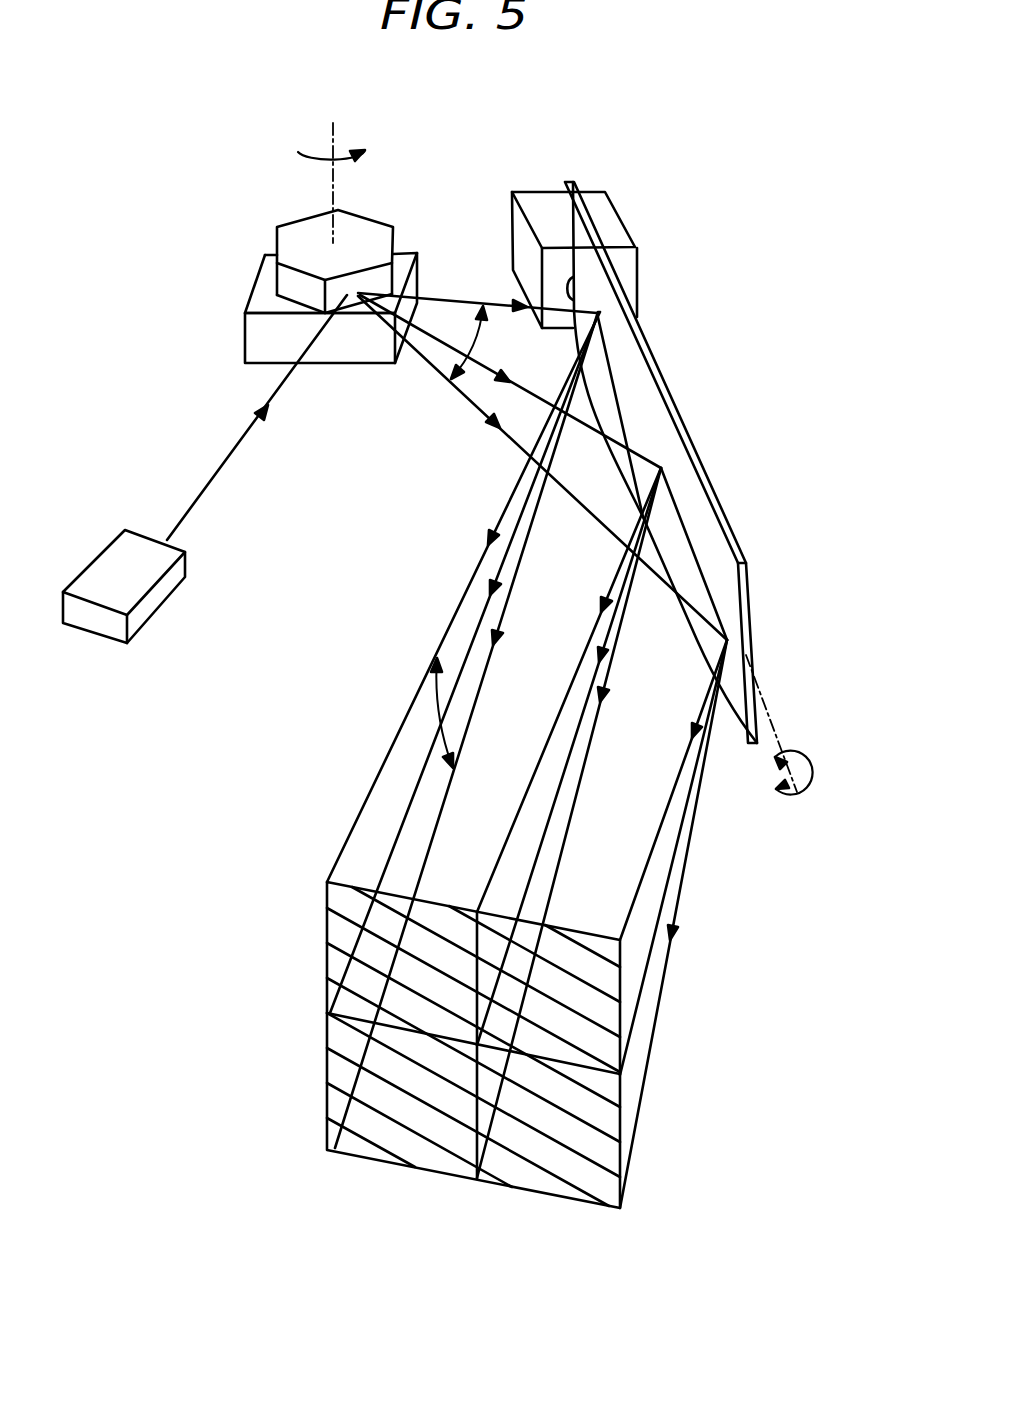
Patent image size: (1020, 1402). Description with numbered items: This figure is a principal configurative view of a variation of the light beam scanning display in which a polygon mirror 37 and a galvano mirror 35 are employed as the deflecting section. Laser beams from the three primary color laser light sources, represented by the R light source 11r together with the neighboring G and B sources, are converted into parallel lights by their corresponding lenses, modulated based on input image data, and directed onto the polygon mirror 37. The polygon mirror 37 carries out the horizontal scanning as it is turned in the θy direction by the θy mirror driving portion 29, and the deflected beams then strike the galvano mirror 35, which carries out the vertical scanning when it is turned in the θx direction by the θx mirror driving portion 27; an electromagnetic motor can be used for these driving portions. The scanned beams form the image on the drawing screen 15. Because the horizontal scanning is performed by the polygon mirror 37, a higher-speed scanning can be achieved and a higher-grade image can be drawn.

The R light source 11r is at (155, 605).
The drawing screen 15 is at (577, 1187).
The θx mirror driving portion 27 is at (540, 200).
The θy mirror driving portion 29 is at (261, 346).
The galvano mirror 35 is at (659, 373).
The polygon mirror 37 is at (358, 226).